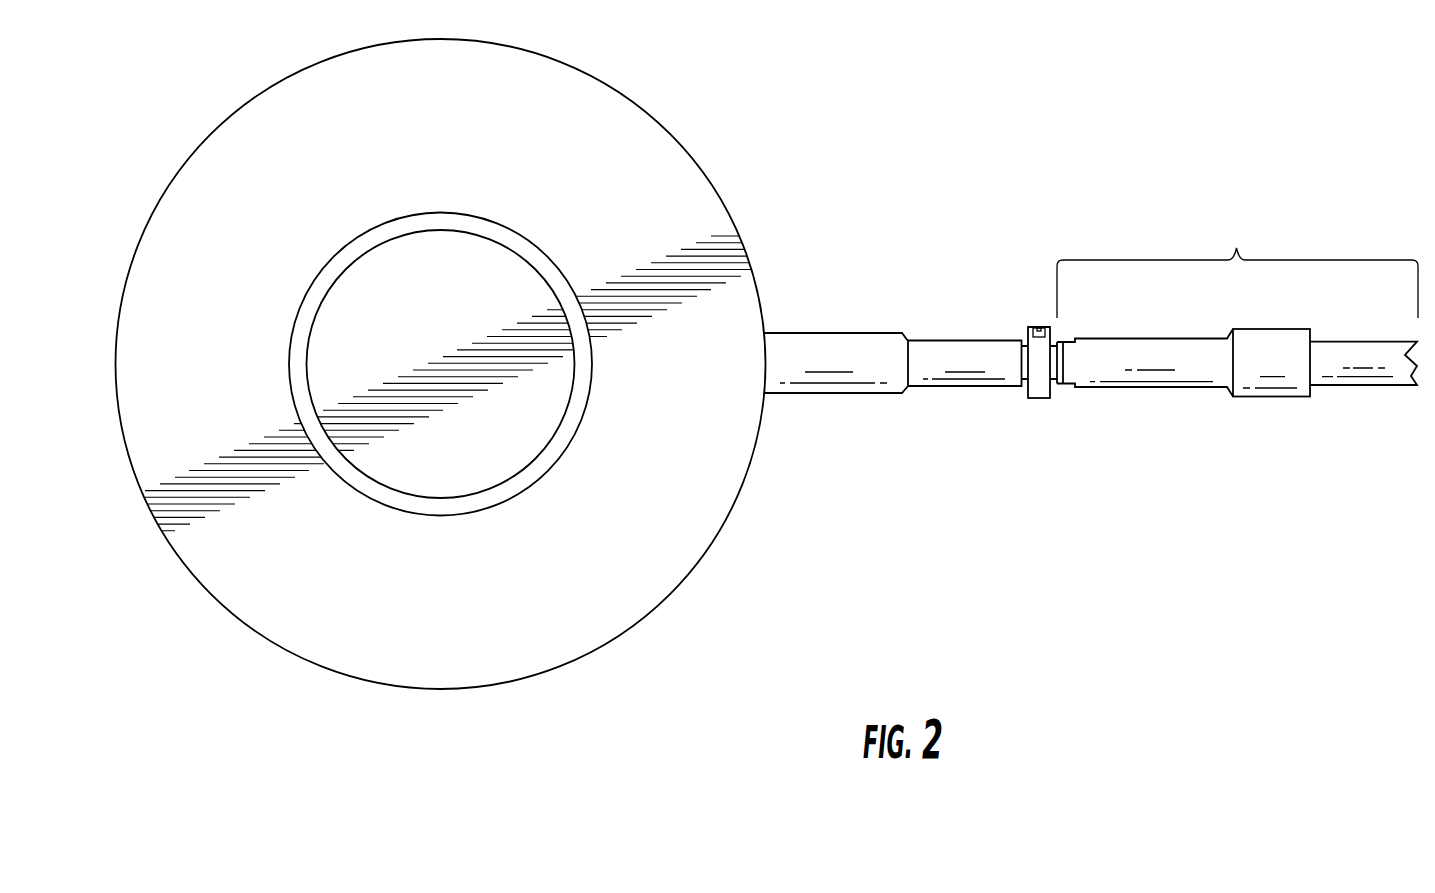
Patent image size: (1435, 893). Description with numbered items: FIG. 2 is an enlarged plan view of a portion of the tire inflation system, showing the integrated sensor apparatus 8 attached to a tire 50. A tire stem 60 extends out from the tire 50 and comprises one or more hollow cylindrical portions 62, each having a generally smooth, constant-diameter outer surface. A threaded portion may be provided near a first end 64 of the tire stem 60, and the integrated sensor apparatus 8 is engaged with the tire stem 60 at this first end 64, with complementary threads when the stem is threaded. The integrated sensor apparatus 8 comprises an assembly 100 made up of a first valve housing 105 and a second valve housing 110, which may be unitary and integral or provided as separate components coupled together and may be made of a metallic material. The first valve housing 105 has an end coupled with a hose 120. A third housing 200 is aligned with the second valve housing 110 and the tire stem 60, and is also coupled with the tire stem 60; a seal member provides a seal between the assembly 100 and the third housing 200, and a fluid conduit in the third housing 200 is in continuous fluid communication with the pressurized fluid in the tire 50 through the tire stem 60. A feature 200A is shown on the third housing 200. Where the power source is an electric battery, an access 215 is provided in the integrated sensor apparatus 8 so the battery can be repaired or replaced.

The integrated sensor apparatus 8 is at (1185, 162).
The tire 50 is at (443, 688).
The tire stem 60 is at (836, 386).
The cylindrical portion 62 is at (950, 386).
The first end 64 is at (1020, 363).
The assembly 100 is at (1237, 266).
The first valve housing 105 is at (1280, 398).
The second valve housing 110 is at (1177, 388).
The hose 120 is at (1375, 387).
The third housing 200 is at (1024, 380).
The coupling disc top edge 200A is at (1028, 335).
The access 215 is at (1039, 329).